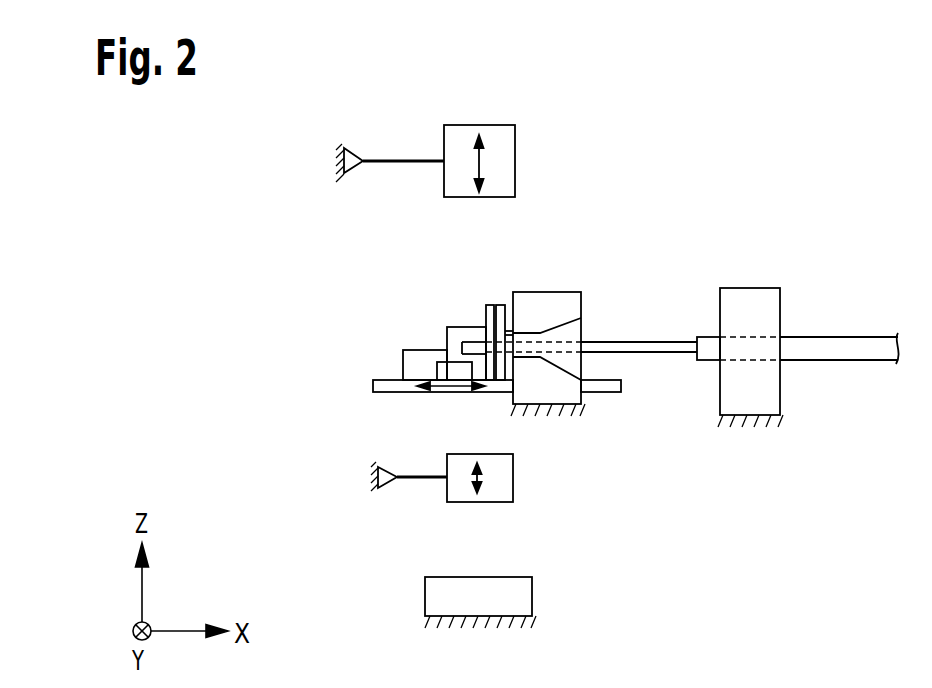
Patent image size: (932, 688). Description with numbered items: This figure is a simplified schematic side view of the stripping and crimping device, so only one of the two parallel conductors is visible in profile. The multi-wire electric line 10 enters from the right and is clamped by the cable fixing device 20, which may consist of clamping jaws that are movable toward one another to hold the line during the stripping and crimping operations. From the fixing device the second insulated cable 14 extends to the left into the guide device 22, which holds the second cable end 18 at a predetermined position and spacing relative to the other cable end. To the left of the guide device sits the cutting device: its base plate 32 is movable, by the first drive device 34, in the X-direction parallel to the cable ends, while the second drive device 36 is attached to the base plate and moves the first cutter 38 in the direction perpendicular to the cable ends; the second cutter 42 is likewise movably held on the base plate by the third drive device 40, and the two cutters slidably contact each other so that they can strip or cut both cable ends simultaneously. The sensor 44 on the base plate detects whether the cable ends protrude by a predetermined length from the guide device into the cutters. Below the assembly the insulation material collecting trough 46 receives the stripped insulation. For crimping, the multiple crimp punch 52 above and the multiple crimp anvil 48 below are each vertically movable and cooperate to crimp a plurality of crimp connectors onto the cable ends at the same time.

The multi-wire electric line 10 is at (837, 343).
The second insulated cable 14 is at (643, 345).
The second cable end 18 is at (473, 340).
The cable fixing device 20 is at (770, 380).
The guide device 22 is at (550, 390).
The base plate 32 is at (388, 387).
The first drive device 34 is at (403, 365).
The second drive device 36 is at (447, 335).
The first cutter 38 is at (491, 305).
The third drive device 40 is at (517, 335).
The second cutter 42 is at (499, 305).
The sensor 44 is at (460, 368).
The insulation material collecting trough 46 is at (532, 592).
The multiple crimp anvil 48 is at (513, 480).
The multiple crimp punch 52 is at (516, 161).